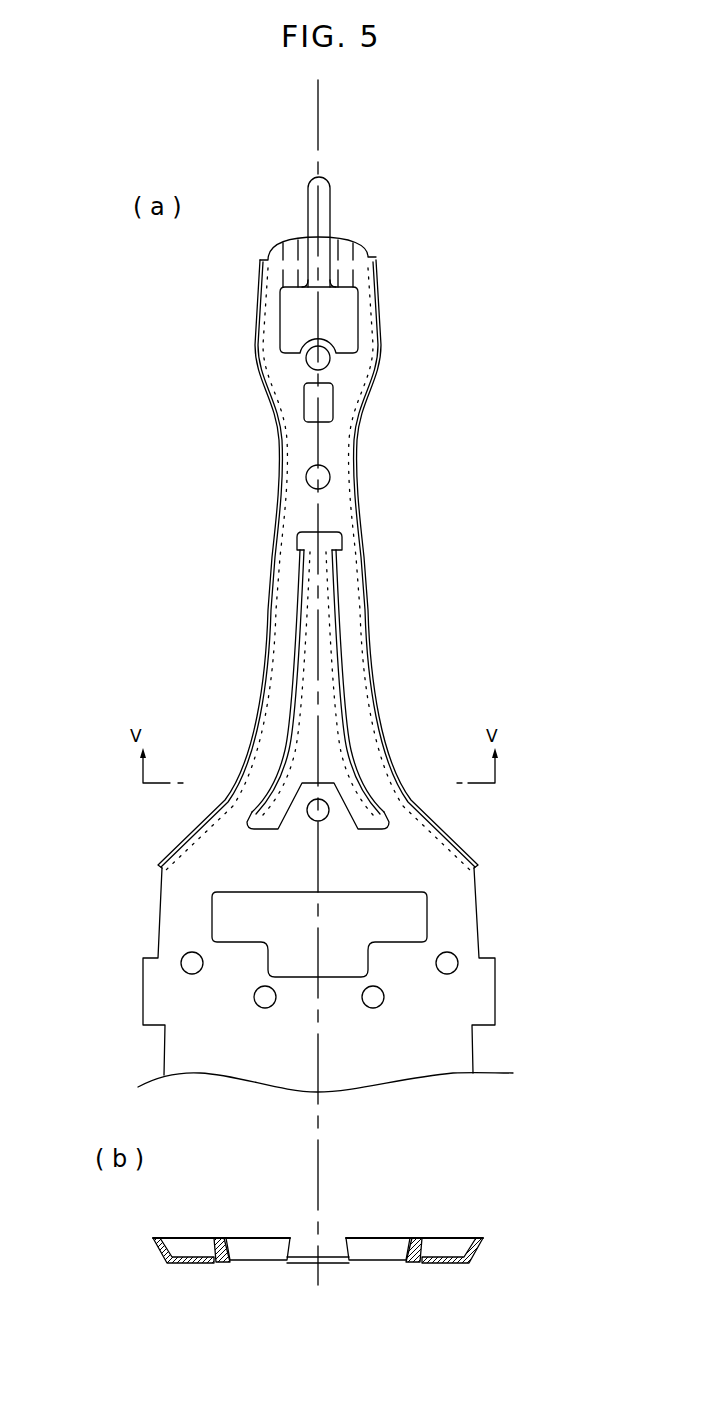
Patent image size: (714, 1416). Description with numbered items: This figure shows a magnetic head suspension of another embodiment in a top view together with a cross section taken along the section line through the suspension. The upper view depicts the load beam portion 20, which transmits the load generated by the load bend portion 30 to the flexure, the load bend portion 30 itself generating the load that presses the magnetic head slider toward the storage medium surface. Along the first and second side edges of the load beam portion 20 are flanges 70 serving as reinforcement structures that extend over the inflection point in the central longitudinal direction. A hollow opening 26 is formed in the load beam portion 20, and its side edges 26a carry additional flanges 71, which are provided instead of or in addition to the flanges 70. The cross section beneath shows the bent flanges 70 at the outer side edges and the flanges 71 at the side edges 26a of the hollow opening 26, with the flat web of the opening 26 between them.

The load beam portion 20 is at (413, 715).
The hollow opening 26 is at (313, 750).
The side edges of hollow opening 26a is at (297, 637).
The load bend portion 30 is at (512, 897).
The flanges 70 is at (155, 1245).
The flanges 71 is at (220, 1238).